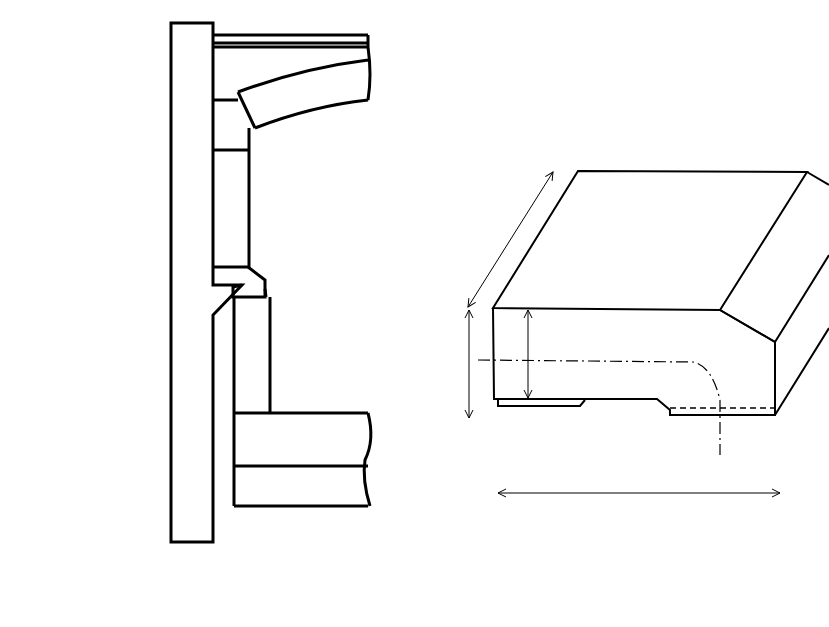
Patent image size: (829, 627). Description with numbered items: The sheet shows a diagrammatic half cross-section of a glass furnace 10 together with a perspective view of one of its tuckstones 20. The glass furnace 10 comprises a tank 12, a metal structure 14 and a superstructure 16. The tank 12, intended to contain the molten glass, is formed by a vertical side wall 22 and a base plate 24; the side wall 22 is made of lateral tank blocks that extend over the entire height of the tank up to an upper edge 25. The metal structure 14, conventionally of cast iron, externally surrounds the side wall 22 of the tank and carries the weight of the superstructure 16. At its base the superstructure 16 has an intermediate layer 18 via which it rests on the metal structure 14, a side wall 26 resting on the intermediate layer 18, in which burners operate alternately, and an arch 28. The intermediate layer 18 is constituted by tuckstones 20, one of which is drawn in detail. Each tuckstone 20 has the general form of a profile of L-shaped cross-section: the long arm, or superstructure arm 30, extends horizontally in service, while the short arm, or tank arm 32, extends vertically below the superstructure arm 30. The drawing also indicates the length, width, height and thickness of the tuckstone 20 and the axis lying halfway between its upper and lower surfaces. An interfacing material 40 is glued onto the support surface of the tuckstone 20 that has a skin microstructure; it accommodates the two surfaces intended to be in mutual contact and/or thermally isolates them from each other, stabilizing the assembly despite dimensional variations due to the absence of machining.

In FIG. 1, the glass furnace 10 is at (130, 177).
In FIG. 1, the tank 12 is at (348, 396).
In FIG. 1, the metal structure 14 is at (193, 298).
In FIG. 1, the superstructure 16 is at (285, 177).
In FIG. 1, the intermediate layer 18 is at (288, 287).
In FIG. 1, the tuckstone 20 is at (260, 276).
In FIG. 2A, the tuckstone 20 is at (492, 229).
In FIG. 1, the vertical side wall 22 is at (253, 343).
In FIG. 1, the base plate 24 is at (338, 432).
In FIG. 1, the upper edge 25 is at (268, 292).
In FIG. 1, the side wall 26 is at (233, 218).
In FIG. 1, the arch 28 is at (345, 90).
In FIG. 2A, the superstructure arm 30 is at (586, 347).
In FIG. 2A, the tank arm 32 is at (746, 389).
In FIG. 2A, the interfacing material 40 is at (534, 407).